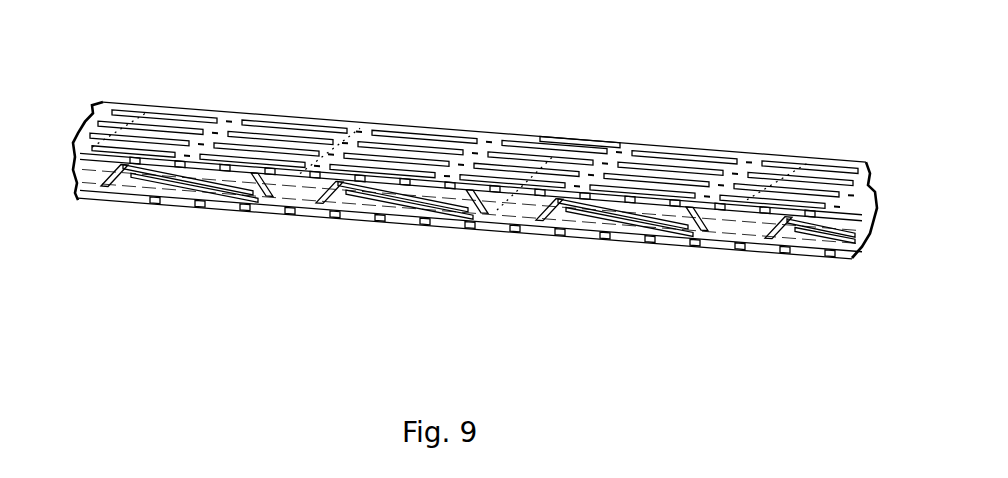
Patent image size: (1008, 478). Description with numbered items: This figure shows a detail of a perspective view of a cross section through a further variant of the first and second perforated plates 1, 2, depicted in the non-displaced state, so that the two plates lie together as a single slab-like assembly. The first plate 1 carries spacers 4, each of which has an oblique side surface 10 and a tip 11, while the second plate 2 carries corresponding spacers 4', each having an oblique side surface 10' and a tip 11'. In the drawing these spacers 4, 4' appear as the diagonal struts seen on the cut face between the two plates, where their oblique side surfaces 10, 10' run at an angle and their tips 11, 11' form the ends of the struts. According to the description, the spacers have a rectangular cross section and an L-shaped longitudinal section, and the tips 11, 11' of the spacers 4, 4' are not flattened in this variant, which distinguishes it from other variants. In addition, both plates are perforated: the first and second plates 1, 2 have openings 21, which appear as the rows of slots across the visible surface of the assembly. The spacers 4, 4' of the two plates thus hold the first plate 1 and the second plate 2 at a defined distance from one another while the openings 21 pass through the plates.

The first perforated plate 1 is at (280, 229).
The second perforated plate 2 is at (370, 128).
The openings 21 is at (582, 143).
The spacer of the first plate 4 is at (177, 220).
The spacer of the second plate 4' is at (198, 234).
The tip of the spacer of the first plate 11 is at (389, 243).
The tip of the spacer of the second plate 11' is at (422, 246).
The oblique side surface of the spacer of the first plate 10 is at (614, 271).
The oblique side surface of the spacer of the second plate 10' is at (623, 264).